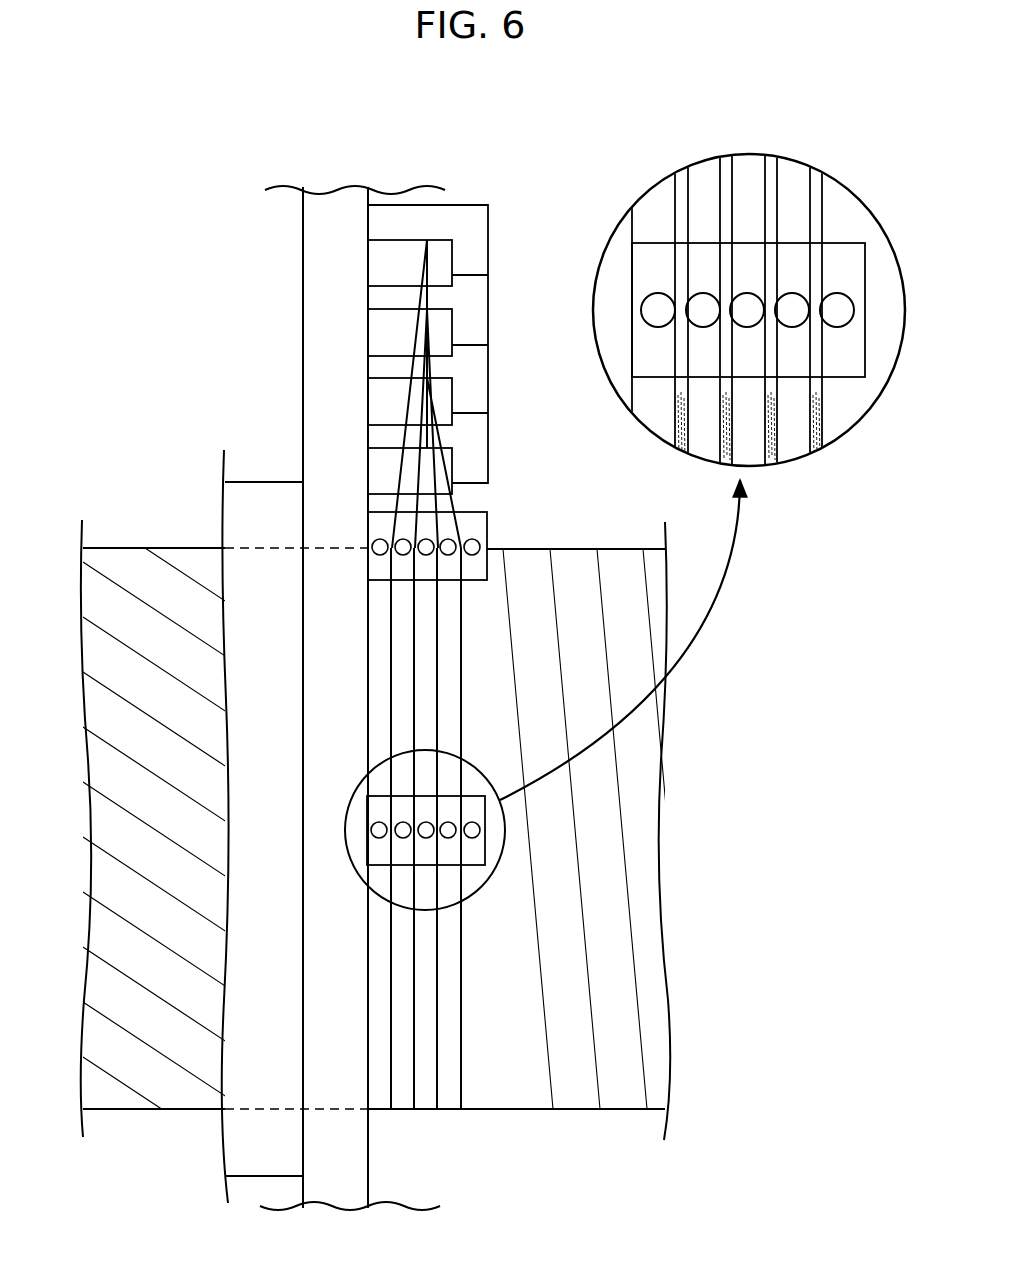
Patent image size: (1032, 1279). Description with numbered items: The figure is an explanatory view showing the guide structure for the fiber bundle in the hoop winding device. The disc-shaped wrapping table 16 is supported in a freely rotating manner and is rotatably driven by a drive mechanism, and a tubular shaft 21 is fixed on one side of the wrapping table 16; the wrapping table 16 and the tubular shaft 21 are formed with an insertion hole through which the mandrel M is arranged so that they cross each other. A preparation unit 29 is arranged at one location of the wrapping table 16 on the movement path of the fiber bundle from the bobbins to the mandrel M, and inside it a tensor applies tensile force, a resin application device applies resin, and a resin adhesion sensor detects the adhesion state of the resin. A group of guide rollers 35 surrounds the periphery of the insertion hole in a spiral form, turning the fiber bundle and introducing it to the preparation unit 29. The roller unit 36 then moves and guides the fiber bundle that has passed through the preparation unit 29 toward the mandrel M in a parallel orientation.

The wrapping table 16 is at (318, 225).
The tubular shaft 21 is at (262, 480).
The preparation unit 29 is at (473, 302).
The guide rollers 35 is at (380, 327).
The roller unit 36 is at (492, 520).
The mandrel M is at (172, 548).